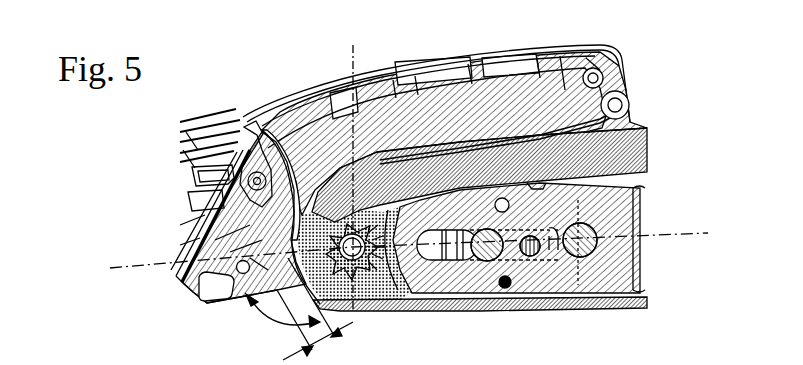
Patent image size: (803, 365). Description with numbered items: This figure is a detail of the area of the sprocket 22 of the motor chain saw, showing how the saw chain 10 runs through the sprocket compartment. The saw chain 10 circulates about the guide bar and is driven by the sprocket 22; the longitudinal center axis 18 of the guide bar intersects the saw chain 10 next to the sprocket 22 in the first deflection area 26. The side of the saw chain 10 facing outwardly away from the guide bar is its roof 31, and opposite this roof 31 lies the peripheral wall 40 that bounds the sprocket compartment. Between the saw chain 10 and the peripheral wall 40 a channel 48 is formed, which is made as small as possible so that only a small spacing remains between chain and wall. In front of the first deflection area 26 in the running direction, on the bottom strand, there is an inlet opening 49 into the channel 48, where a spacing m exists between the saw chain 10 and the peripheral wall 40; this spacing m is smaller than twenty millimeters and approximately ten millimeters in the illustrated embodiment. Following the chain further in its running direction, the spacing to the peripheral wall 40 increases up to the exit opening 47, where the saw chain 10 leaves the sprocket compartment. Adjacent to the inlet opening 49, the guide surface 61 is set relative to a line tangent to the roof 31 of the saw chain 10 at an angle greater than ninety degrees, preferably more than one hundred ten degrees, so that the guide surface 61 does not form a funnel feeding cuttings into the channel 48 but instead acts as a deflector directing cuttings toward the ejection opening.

The saw chain 10 is at (631, 147).
The longitudinal center axis 18 is at (678, 233).
The sprocket 22 is at (382, 258).
The first deflection area 26 is at (244, 143).
The roof 31 is at (444, 163).
The peripheral wall 40 is at (498, 152).
The exit opening 47 is at (618, 106).
The channel 48 is at (328, 160).
The inlet opening 49 is at (247, 280).
The guide surface 61 is at (236, 302).
The spacing m is at (318, 343).